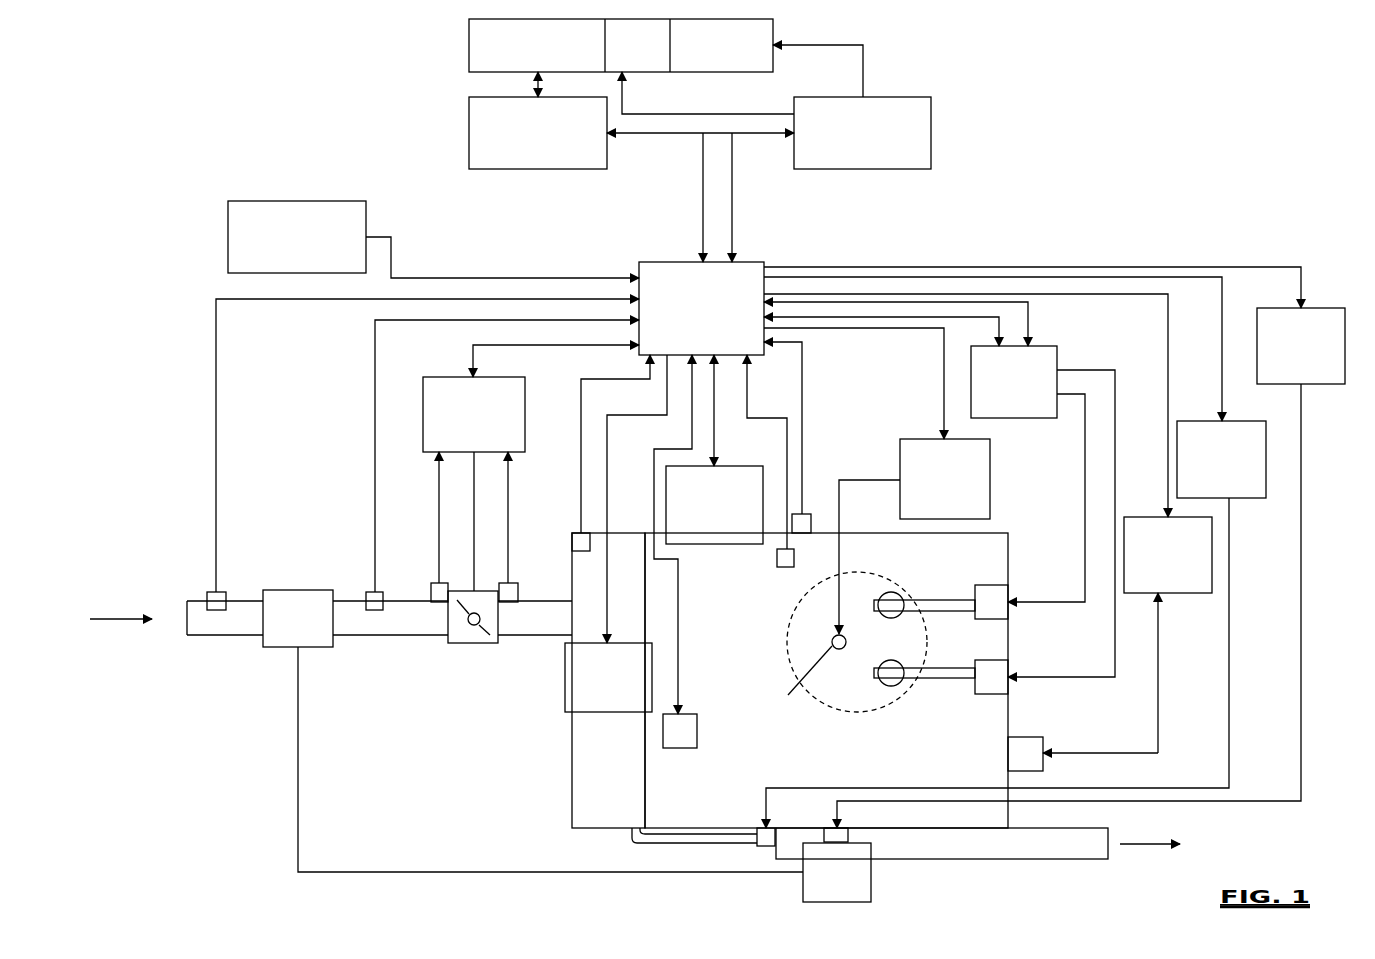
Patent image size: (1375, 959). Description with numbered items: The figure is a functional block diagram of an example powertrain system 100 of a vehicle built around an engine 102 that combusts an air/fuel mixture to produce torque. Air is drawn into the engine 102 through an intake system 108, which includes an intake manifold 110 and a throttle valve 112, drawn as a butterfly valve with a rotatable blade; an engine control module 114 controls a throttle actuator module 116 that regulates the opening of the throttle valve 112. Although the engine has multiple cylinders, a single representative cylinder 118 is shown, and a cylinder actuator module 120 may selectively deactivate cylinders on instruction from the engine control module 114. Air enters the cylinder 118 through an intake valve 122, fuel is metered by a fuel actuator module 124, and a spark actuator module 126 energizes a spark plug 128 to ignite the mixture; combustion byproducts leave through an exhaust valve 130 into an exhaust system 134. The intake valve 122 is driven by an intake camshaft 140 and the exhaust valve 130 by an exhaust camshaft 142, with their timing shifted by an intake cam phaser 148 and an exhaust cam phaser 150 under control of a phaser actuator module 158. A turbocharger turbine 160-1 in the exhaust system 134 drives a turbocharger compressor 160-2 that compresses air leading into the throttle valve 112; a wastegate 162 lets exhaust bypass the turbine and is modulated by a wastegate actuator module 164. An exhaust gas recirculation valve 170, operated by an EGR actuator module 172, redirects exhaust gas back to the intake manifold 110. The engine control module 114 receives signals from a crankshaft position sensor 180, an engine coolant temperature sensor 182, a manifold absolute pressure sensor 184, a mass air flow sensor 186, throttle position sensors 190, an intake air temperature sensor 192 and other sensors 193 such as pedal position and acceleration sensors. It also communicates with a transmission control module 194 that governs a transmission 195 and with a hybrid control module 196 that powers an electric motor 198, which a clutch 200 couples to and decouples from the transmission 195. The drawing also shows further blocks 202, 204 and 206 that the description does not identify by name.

The powertrain system 100 is at (80, 75).
The engine 102 is at (1008, 545).
The intake system 108 is at (182, 666).
The intake manifold 110 is at (572, 760).
The throttle valve 112 is at (470, 643).
The engine control module 114 is at (757, 262).
The throttle actuator module 116 is at (447, 377).
The cylinder 118 is at (788, 645).
The cylinder actuator module 120 is at (728, 466).
The intake valve 122 is at (890, 580).
The fuel actuator module 124 is at (565, 680).
The spark actuator module 126 is at (990, 482).
The spark plug 128 is at (788, 695).
The exhaust valve 130 is at (888, 700).
The exhaust system 134 is at (1078, 862).
The intake camshaft 140 is at (946, 600).
The exhaust camshaft 142 is at (952, 678).
The intake cam phaser 148 is at (990, 585).
The exhaust cam phaser 150 is at (992, 694).
The phaser actuator module 158 is at (1057, 360).
The turbocharger turbine 160-1 is at (871, 870).
The turbocharger compressor 160-2 is at (290, 647).
The wastegate 162 is at (848, 836).
The wastegate actuator module 164 is at (1325, 384).
The exhaust gas recirculation valve 170 is at (760, 845).
The EGR actuator module 172 is at (1240, 498).
The crankshaft position sensor 180 is at (805, 514).
The engine coolant temperature sensor 182 is at (780, 567).
The manifold absolute pressure sensor 184 is at (572, 540).
The mass air flow sensor 186 is at (372, 592).
The throttle position sensor 190 is at (440, 602).
The intake air temperature sensor 192 is at (215, 592).
The other sensors 193 is at (228, 215).
The transmission control module 194 is at (469, 124).
The transmission 195 is at (469, 45).
The hybrid control module 196 is at (863, 169).
The electric motor 198 is at (718, 72).
The clutch 200 is at (630, 72).
The exhaust pressure sensor 202 is at (1043, 752).
The pressure controller 204 is at (1168, 593).
The chamber sensor 206 is at (680, 748).